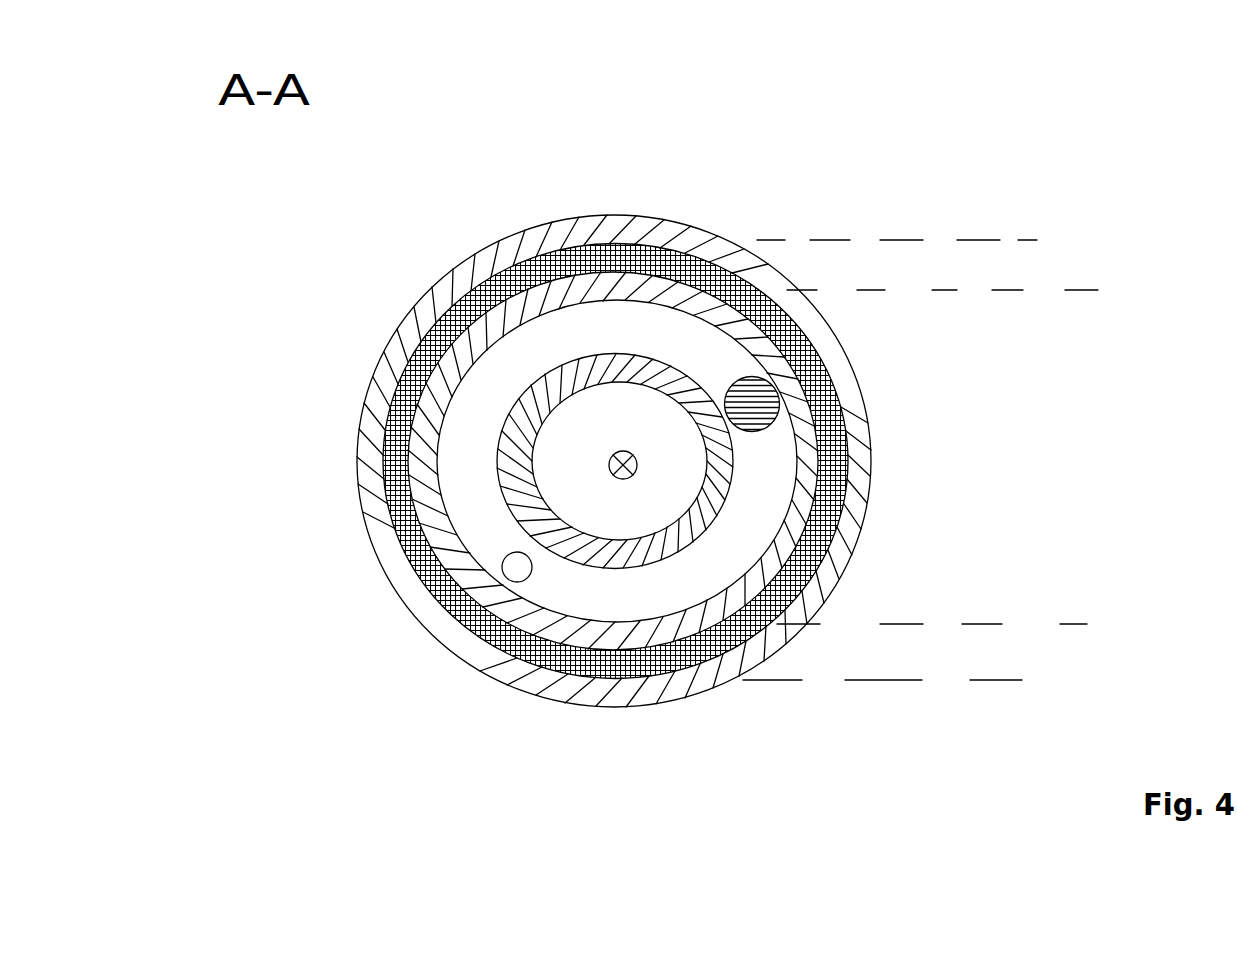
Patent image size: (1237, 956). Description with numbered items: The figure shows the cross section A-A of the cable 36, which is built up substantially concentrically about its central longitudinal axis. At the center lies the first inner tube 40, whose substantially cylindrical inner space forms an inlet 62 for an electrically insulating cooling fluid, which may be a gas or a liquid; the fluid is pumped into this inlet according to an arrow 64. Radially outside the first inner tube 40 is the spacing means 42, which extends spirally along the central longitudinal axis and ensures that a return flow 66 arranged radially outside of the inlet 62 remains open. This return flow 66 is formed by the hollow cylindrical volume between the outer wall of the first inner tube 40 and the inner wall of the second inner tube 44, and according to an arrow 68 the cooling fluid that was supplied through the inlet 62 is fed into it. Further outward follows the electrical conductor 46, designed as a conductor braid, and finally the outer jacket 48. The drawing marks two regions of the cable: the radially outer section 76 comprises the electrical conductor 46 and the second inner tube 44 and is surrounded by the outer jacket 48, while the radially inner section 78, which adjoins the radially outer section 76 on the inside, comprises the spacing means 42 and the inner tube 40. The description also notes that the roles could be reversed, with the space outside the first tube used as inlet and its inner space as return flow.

The cable 36 is at (915, 105).
The first inner tube 40 is at (720, 470).
The spacing means 42 is at (815, 392).
The second inner tube 44 is at (433, 300).
The electrical conductor 46 is at (510, 255).
The outer jacket 48 is at (577, 232).
The inlet 62 is at (565, 437).
The arrow 64 is at (628, 478).
The return flow 66 is at (470, 497).
The arrow 68 is at (513, 582).
The radially outer section 76 is at (1040, 232).
The radially inner section 78 is at (1108, 290).